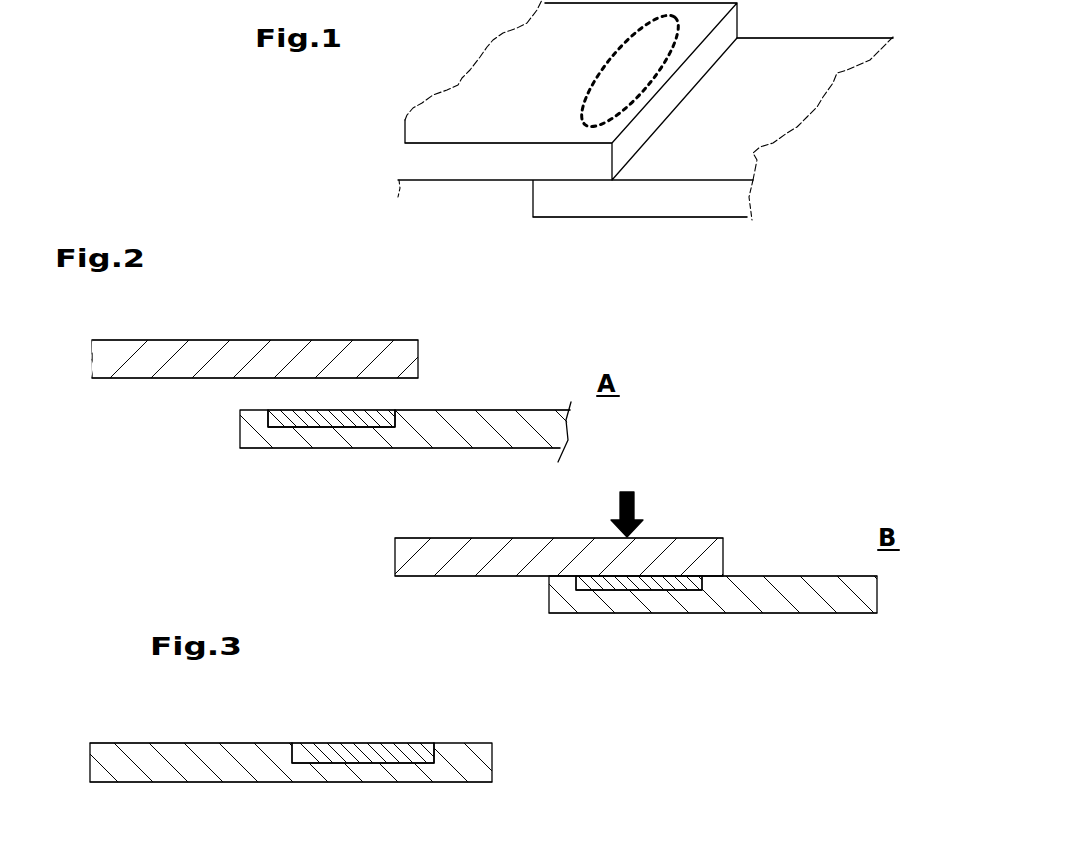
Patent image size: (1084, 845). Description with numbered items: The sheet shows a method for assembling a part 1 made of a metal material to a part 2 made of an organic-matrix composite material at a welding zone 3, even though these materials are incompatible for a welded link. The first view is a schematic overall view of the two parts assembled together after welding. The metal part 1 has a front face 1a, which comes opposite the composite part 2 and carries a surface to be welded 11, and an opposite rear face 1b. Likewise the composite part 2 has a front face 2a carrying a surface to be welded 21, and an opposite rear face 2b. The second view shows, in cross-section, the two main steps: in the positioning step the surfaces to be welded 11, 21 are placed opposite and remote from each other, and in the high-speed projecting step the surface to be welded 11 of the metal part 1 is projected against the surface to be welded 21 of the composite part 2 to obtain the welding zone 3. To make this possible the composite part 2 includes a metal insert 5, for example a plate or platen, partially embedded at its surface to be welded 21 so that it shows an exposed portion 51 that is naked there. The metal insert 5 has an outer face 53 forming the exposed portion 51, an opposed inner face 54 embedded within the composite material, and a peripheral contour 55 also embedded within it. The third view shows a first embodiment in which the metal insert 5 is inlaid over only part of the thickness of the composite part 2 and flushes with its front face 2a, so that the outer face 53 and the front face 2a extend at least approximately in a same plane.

In FIG. 1, the part made of a metal material 1 is at (460, 174).
In FIG. 2, the part made of a metal material 1 is at (104, 364).
In FIG. 1, the front face 1a is at (413, 162).
In FIG. 2, the front face 1a is at (130, 390).
In FIG. 1, the rear face 1b is at (503, 66).
In FIG. 2, the rear face 1b is at (250, 328).
In FIG. 1, the part made of an organic-matrix composite material 2 is at (740, 197).
In FIG. 2, the part made of an organic-matrix composite material 2 is at (257, 428).
In FIG. 3, the part made of an organic-matrix composite material 2 is at (103, 765).
In FIG. 1, the front face 2a is at (768, 52).
In FIG. 2, the front face 2a is at (490, 397).
In FIG. 3, the front face 2a is at (150, 731).
In FIG. 1, the rear face 2b is at (648, 230).
In FIG. 2, the rear face 2b is at (483, 462).
In FIG. 1, the welding zone 3 is at (582, 100).
In FIG. 2, the welding zone 3 is at (680, 558).
In FIG. 2, the metal insert 5 is at (338, 420).
In FIG. 3, the metal insert 5 is at (405, 753).
In FIG. 2, the surface to be welded 11 is at (288, 395).
In FIG. 2, the surface to be welded 21 is at (377, 345).
In FIG. 3, the surface to be welded 21 is at (298, 762).
In FIG. 2, the exposed portion 51 is at (377, 345).
In FIG. 3, the exposed portion 51 is at (337, 732).
In FIG. 2, the outer face 53 is at (365, 392).
In FIG. 3, the outer face 53 is at (298, 762).
In FIG. 3, the inner face 54 is at (416, 793).
In FIG. 3, the peripheral contour 55 is at (448, 753).